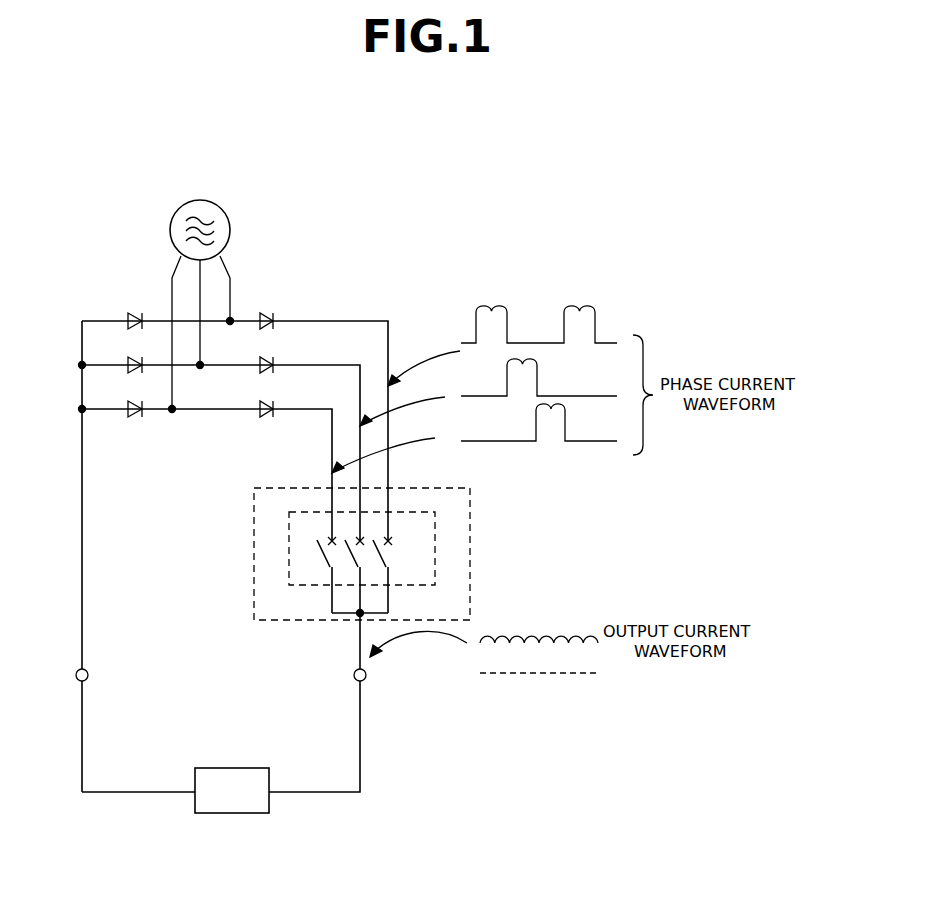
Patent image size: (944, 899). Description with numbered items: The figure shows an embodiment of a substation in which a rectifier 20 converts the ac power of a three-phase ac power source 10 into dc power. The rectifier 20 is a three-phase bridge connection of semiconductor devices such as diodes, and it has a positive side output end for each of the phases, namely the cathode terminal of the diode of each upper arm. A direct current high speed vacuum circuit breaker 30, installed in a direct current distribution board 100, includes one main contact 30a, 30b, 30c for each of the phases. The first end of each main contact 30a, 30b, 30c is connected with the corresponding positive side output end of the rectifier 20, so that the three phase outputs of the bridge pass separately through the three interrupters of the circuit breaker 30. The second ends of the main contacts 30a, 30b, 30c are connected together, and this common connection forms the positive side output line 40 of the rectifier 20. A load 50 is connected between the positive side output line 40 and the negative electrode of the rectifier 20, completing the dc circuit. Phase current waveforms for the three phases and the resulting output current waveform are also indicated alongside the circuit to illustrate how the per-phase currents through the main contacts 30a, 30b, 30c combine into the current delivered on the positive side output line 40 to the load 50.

The three-phase ac power source 10 is at (200, 200).
The rectifier 20 is at (290, 313).
The direct current distribution board 100 is at (252, 539).
The direct current high speed vacuum circuit breaker 30 is at (418, 588).
The main contact 30a is at (383, 557).
The main contact 30b is at (352, 557).
The main contact 30c is at (326, 557).
The positive side output line 40 is at (348, 615).
The load 50 is at (270, 801).